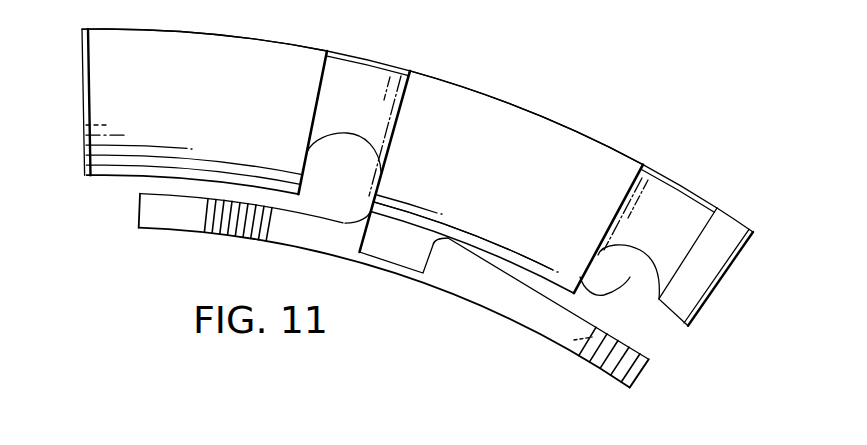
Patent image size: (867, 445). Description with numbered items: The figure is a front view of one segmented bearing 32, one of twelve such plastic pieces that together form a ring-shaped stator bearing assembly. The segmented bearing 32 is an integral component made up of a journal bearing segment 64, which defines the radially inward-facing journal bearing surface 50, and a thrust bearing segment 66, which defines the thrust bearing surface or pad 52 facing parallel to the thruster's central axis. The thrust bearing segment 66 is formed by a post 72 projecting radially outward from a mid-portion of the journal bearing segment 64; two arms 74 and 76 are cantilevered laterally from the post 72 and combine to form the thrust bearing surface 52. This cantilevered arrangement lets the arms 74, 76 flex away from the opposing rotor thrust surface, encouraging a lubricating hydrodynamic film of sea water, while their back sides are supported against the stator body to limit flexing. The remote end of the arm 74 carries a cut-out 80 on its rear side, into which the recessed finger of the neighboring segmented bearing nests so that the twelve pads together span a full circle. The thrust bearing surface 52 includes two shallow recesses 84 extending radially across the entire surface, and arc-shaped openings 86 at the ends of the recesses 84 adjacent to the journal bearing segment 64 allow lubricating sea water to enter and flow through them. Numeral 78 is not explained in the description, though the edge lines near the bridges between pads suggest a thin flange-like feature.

The segmented bearing 32 is at (112, 221).
The journal bearing surface 50 is at (584, 360).
The thrust bearing surface 52 is at (198, 112).
The journal bearing segment 64 is at (478, 300).
The thrust bearing segment 66 is at (468, 118).
The post 72 is at (397, 243).
The arm 74 is at (563, 160).
The arm 76 is at (238, 67).
The bridge flange 78 is at (331, 83).
The cut-out 80 is at (728, 238).
The shallow recesses 84 is at (373, 92).
The arc-shaped openings 86 is at (343, 163).